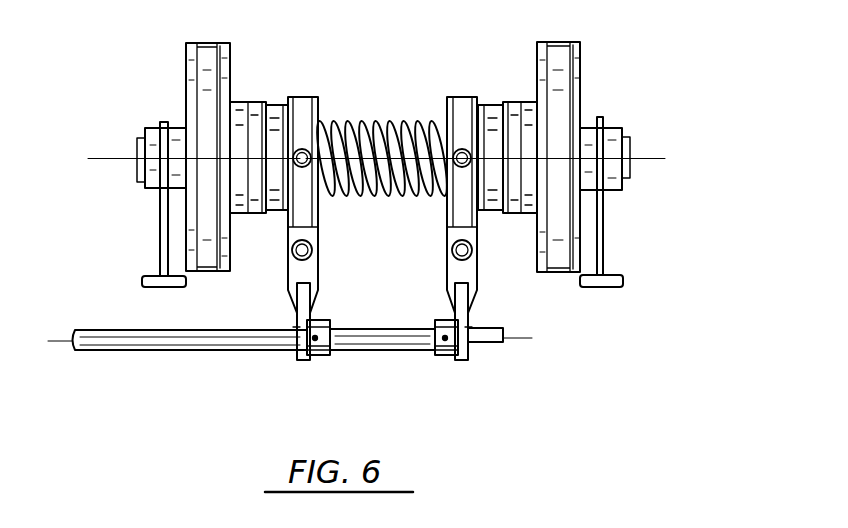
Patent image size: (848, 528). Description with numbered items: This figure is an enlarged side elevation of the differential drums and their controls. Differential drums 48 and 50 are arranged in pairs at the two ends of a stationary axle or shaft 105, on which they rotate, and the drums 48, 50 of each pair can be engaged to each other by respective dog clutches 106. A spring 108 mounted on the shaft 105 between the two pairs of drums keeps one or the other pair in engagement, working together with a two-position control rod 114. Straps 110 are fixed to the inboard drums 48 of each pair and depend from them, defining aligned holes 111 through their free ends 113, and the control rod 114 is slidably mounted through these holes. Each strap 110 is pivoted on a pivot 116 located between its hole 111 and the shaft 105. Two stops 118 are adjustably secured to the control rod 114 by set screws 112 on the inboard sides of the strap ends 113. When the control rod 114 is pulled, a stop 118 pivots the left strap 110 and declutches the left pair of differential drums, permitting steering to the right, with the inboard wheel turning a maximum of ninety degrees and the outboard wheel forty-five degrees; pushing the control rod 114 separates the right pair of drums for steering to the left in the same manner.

The differential drum 48 is at (270, 102).
The differential drum 50 is at (203, 45).
The stationary axle or shaft 105 is at (408, 118).
The dog clutch 106 is at (248, 100).
The spring 108 is at (352, 120).
The strap 110 is at (445, 220).
The aligned hole 111 is at (294, 328).
The set screw 112 is at (313, 345).
The free end 113 is at (298, 362).
The two-position control rod 114 is at (173, 350).
The pivot 116 is at (450, 250).
The stop 118 is at (443, 325).